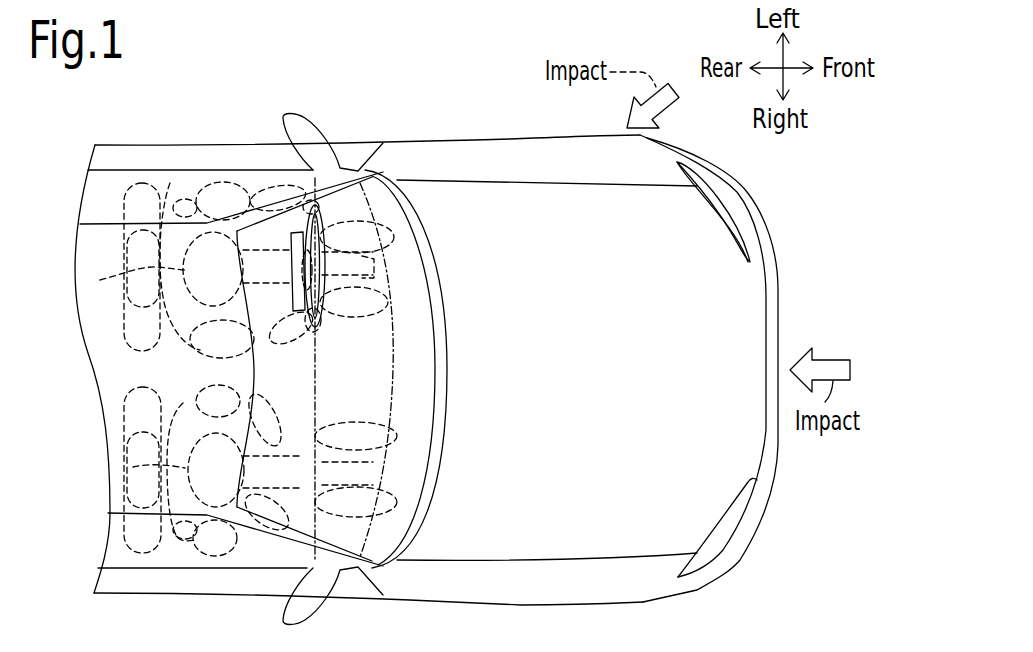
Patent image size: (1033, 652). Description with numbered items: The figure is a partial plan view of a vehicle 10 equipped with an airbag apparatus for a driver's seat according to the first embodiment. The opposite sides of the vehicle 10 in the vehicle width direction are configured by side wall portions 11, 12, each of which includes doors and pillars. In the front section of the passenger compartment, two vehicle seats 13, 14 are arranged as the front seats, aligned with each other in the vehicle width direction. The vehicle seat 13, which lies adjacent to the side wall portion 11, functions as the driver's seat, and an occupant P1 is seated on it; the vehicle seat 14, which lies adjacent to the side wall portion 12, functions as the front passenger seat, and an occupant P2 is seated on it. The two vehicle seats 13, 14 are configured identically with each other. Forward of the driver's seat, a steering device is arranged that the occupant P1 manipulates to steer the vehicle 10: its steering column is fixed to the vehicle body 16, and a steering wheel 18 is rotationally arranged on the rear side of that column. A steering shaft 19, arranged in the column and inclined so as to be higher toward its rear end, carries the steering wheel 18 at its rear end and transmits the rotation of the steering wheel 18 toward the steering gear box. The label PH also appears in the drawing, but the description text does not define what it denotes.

The vehicle 10 is at (767, 581).
The side wall portion 11 is at (248, 155).
The side wall portion 12 is at (252, 585).
The vehicle seat 13 is at (142, 182).
The vehicle seat 14 is at (143, 555).
The vehicle body 16 is at (357, 147).
The steering wheel 18 is at (318, 335).
The steering shaft 19 is at (418, 257).
The occupant P1 is at (168, 195).
The occupant P2 is at (170, 553).
The hip point / seated occupant reference PH is at (100, 280).